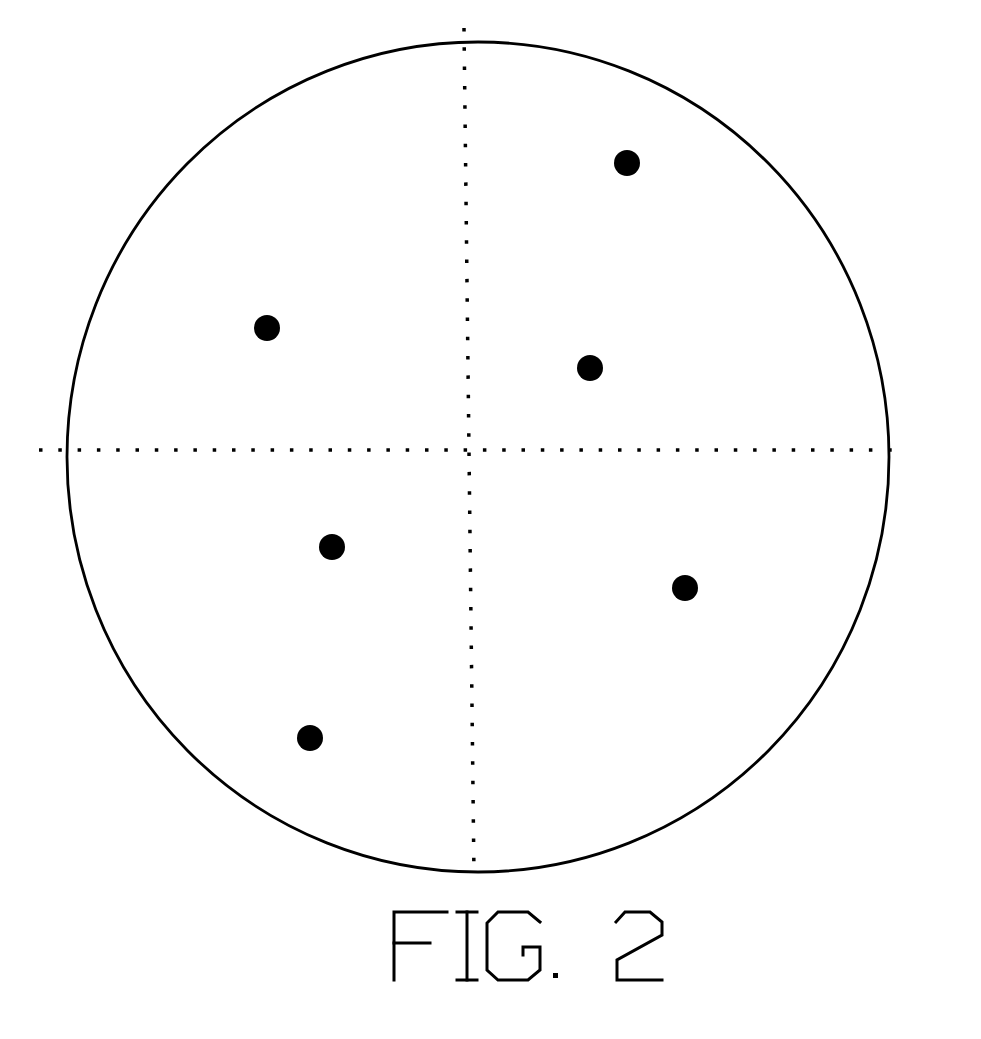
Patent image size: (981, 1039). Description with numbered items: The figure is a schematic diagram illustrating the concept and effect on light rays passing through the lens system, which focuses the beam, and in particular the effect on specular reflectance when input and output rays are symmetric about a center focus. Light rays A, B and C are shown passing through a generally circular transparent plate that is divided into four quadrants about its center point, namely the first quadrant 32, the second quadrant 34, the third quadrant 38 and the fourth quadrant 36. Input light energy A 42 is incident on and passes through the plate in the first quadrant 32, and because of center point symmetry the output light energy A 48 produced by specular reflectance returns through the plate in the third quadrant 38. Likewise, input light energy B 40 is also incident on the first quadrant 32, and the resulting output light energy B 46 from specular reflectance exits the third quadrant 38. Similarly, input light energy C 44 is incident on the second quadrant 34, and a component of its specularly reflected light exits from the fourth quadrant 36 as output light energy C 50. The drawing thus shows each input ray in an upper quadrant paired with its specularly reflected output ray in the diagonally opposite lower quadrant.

The first quadrant 32 is at (683, 249).
The second quadrant 34 is at (272, 249).
The fourth quadrant 36 is at (683, 664).
The third quadrant 38 is at (272, 664).
The input light energy B 40 is at (647, 163).
The input light energy A 42 is at (610, 367).
The input light energy C 44 is at (285, 331).
The output light energy B 46 is at (328, 736).
The output light energy A 48 is at (308, 544).
The output light energy C 50 is at (702, 590).